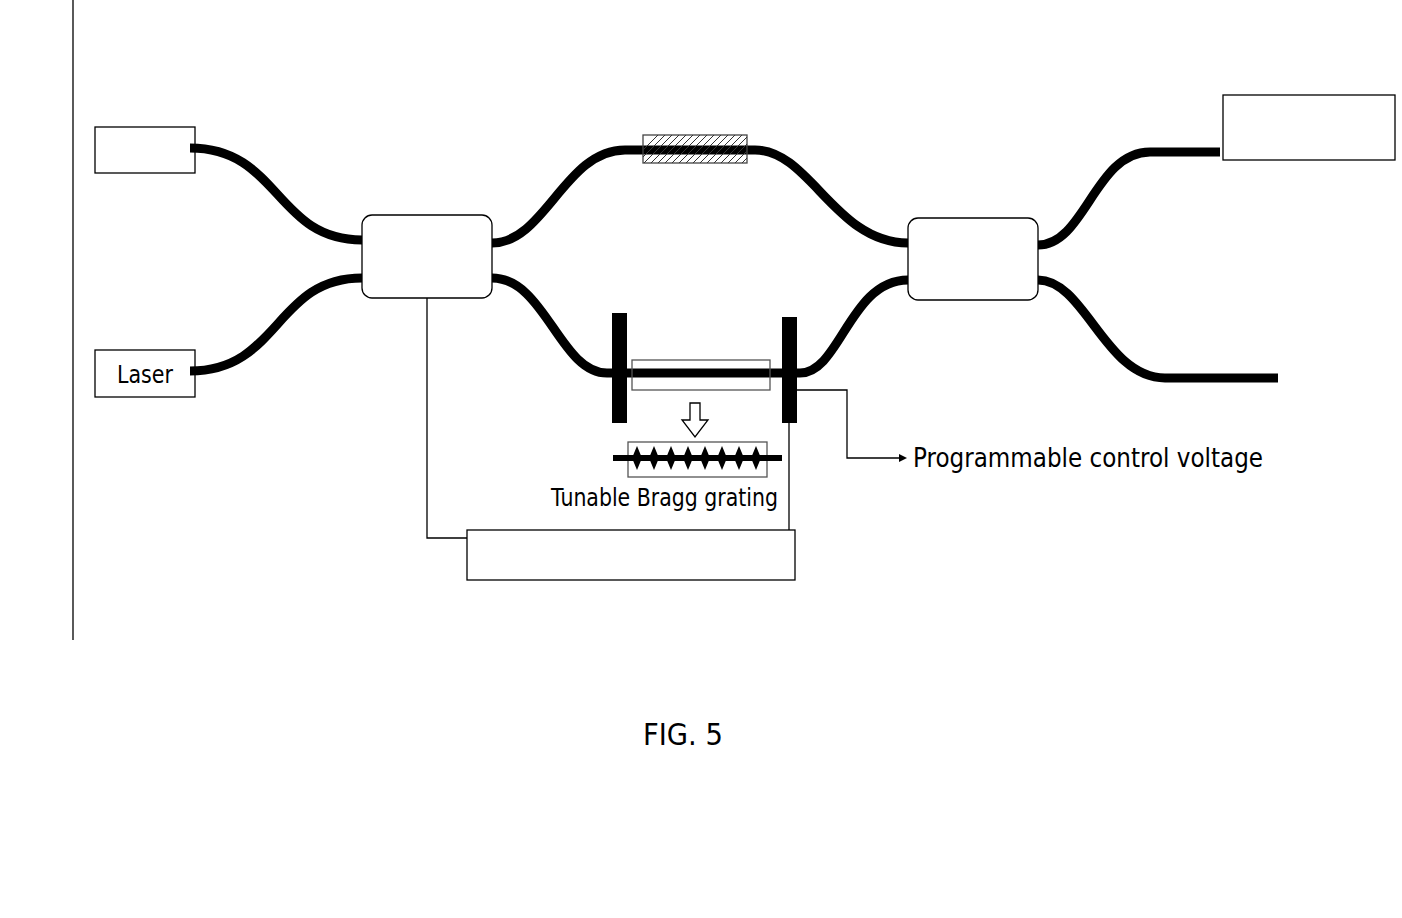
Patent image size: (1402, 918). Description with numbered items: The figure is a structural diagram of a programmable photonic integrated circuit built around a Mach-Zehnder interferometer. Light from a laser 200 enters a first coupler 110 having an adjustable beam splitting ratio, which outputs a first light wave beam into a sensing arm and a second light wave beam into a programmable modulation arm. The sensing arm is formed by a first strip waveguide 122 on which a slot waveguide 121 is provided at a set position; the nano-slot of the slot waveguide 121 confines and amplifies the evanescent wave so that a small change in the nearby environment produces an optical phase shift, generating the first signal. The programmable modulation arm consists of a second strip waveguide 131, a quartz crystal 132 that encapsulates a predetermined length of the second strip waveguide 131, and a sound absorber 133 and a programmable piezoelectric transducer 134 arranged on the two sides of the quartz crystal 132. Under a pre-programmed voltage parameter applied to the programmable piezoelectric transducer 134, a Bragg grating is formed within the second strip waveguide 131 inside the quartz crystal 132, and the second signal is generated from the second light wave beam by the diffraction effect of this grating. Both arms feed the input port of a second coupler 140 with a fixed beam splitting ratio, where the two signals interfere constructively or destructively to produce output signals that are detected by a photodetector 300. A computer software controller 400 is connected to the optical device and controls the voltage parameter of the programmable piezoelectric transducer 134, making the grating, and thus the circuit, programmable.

The laser 200 is at (158, 123).
The first coupler 110 is at (412, 253).
The slot waveguide 121 is at (747, 143).
The first strip waveguide 122 is at (630, 140).
The second strip waveguide 131 is at (597, 365).
The quartz crystal 132 is at (713, 362).
The sound absorber 133 is at (608, 407).
The programmable piezoelectric transducer 134 is at (797, 320).
The second coupler 140 is at (973, 265).
The photodetector 300 is at (1318, 93).
The computer software controller 400 is at (793, 577).